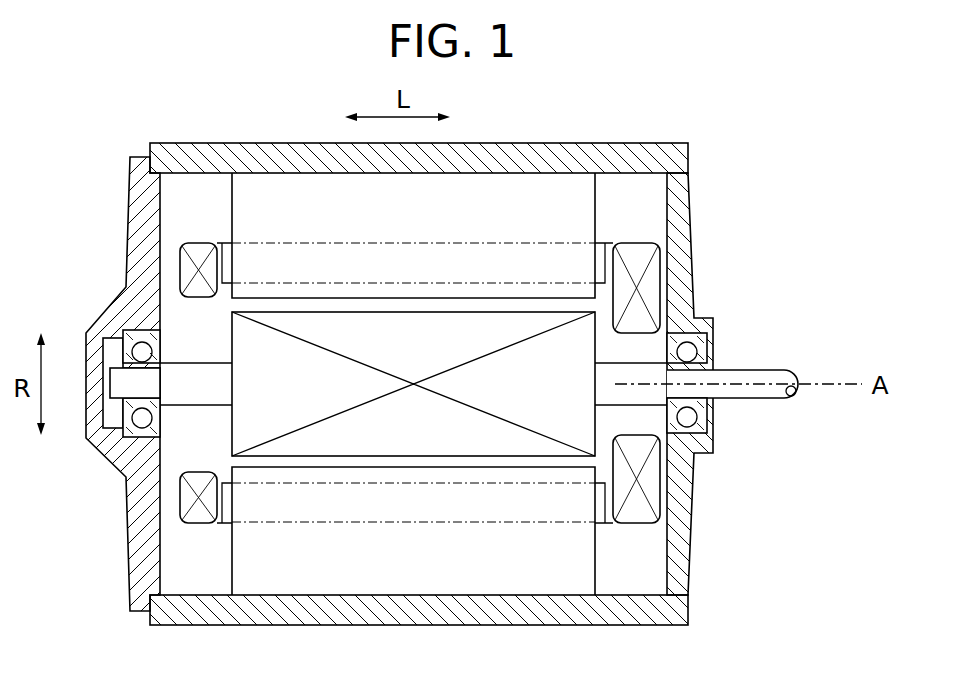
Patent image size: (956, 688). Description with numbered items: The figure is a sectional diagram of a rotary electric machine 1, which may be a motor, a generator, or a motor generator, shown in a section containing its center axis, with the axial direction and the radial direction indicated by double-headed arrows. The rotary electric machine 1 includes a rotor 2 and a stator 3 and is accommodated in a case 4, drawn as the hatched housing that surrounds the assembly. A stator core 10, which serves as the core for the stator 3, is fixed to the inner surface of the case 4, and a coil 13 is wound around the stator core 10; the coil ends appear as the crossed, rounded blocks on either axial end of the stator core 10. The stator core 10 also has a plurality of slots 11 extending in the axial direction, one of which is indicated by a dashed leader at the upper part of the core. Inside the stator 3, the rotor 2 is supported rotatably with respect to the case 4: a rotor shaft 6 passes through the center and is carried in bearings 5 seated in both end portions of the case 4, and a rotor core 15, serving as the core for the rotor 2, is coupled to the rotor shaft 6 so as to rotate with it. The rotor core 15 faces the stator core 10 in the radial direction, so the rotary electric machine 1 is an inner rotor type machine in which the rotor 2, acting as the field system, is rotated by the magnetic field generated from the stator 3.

The rotary electric machine 1 is at (704, 101).
The rotor 2 is at (459, 302).
The stator 3 is at (226, 203).
The case 4 is at (596, 143).
The bearings 5 is at (130, 440).
The rotor shaft 6 is at (208, 400).
The stator core 10 is at (530, 180).
The slots 11 is at (283, 243).
The coil 13 is at (200, 243).
The rotor core 15 is at (340, 323).